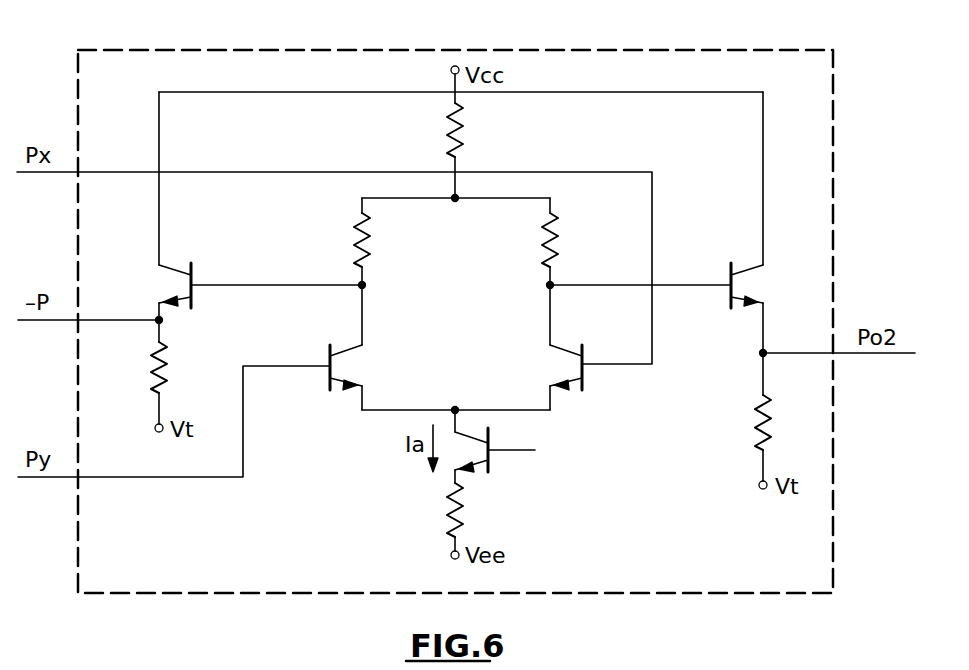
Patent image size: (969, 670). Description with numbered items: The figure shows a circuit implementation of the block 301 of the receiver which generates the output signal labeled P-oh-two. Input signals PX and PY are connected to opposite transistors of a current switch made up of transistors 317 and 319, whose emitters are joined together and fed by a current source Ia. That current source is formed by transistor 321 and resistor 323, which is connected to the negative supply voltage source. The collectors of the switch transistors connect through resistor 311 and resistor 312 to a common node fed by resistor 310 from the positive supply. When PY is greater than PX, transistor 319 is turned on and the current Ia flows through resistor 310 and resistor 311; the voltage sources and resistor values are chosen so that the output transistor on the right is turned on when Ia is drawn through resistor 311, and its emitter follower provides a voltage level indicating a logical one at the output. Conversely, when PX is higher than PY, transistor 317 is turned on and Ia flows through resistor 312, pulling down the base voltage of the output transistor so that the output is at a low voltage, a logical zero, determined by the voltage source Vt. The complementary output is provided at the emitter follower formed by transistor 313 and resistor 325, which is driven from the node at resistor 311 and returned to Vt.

The block 301 is at (698, 50).
The resistor 310 is at (464, 135).
The resistor 311 is at (370, 236).
The resistor 312 is at (558, 236).
The transistor 313 is at (194, 300).
The transistor 317 is at (588, 386).
The transistor 319 is at (324, 386).
The transistor 321 is at (490, 466).
The resistor 323 is at (463, 527).
The resistor 325 is at (167, 365).